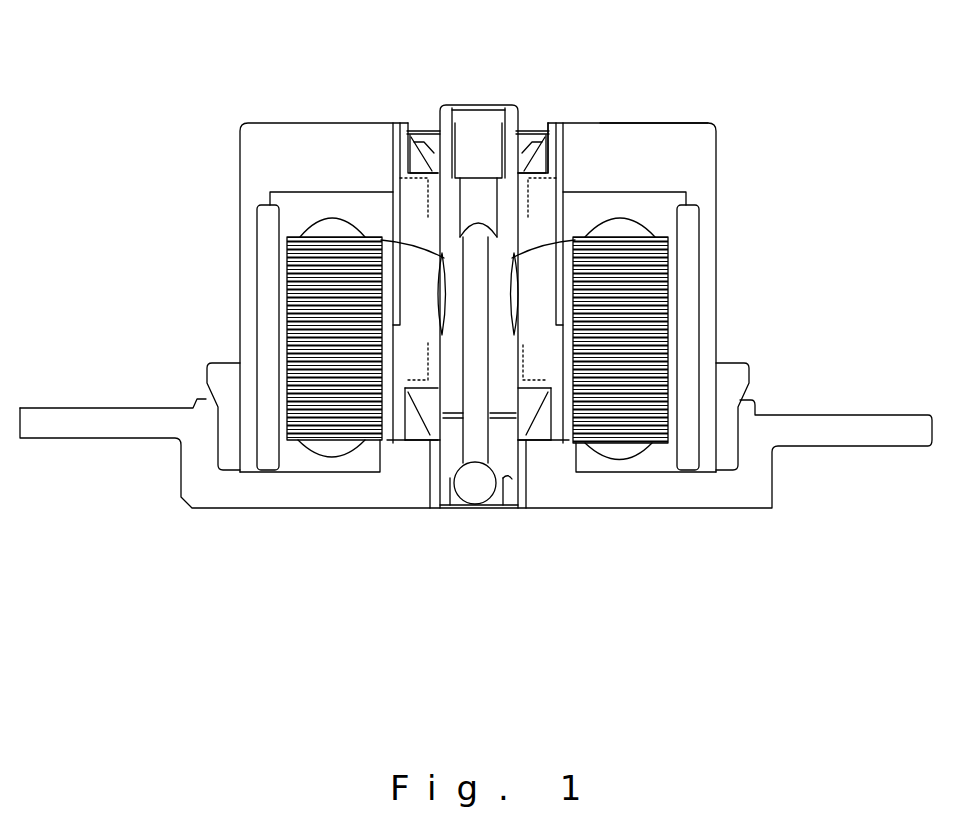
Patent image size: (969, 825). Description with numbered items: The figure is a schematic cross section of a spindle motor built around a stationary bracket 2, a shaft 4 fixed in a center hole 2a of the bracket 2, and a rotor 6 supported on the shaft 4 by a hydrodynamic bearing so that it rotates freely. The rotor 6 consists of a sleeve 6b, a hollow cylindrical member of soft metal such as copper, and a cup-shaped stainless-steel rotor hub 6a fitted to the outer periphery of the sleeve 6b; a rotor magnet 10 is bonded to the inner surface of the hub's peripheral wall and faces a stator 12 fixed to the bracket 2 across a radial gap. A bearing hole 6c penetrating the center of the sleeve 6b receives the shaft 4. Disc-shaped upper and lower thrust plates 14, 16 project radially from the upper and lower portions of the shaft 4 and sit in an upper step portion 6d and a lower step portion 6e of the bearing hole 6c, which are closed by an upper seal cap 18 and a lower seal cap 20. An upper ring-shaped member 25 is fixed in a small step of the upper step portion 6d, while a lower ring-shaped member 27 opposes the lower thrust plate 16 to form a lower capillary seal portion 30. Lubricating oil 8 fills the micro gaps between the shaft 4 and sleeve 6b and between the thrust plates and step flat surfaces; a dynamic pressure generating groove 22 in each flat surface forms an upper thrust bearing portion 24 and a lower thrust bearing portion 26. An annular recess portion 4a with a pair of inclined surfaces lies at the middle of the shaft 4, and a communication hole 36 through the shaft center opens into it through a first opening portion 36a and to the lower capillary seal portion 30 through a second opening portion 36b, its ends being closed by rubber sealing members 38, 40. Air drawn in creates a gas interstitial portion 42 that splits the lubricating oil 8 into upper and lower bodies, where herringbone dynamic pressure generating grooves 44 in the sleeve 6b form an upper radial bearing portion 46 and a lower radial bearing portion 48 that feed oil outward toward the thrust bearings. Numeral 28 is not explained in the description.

The bracket 2 is at (800, 431).
The center hole 2a is at (505, 430).
The shaft 4 is at (292, 352).
The recess portion 4a is at (443, 285).
The rotor 6 is at (712, 116).
The rotor hub 6a is at (703, 168).
The sleeve 6b is at (400, 188).
The bearing hole 6c is at (437, 286).
The upper step portion 6d is at (405, 163).
The lower step portion 6e is at (290, 415).
The lubricating oil 8 is at (483, 238).
The rotor magnet 10 is at (690, 268).
The stator 12 is at (665, 366).
The upper thrust plate 14 is at (545, 130).
The lower thrust plate 16 is at (427, 487).
The upper seal cap 18 is at (420, 131).
The lower seal cap 20 is at (515, 358).
The dynamic pressure generating groove 22 is at (400, 178).
The upper thrust bearing portion 24 is at (565, 127).
The upper ring-shaped member 25 is at (397, 162).
The lower thrust bearing portion 26 is at (532, 383).
The lower ring-shaped member 27 is at (378, 415).
The bearing inner ring 28 is at (530, 132).
The lower capillary seal portion 30 is at (425, 420).
The communication hole 36 is at (473, 328).
The first opening portion 36a is at (523, 292).
The second opening portion 36b is at (515, 412).
The sealing member 38 is at (668, 232).
The sealing member 40 is at (462, 483).
The gas interstitial portion 42 is at (507, 285).
The dynamic pressure generating groove 44 is at (527, 205).
The upper radial bearing portion 46 is at (513, 205).
The lower radial bearing portion 48 is at (530, 365).